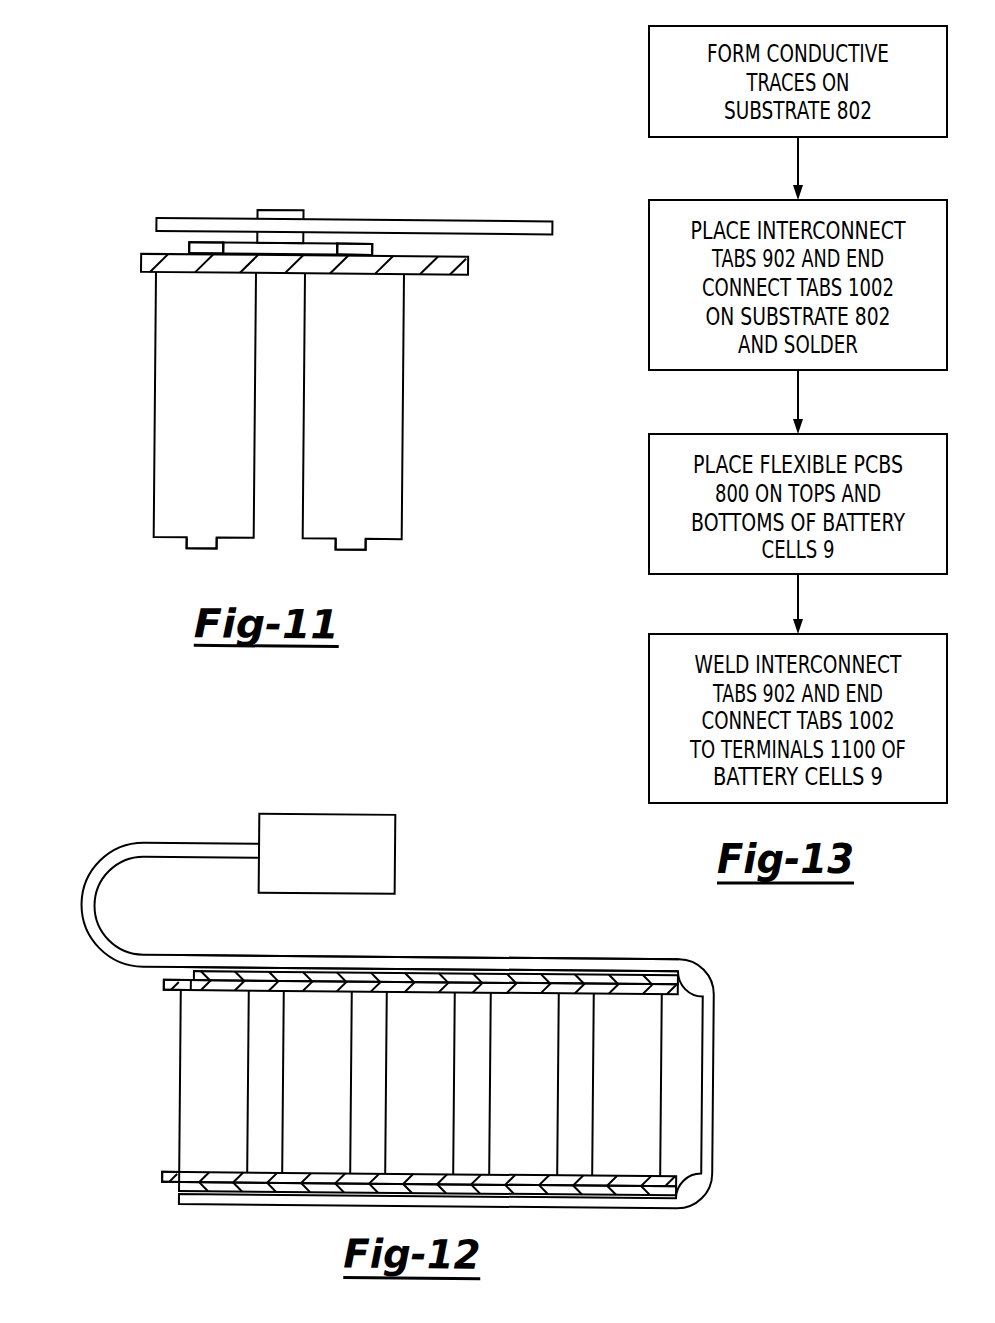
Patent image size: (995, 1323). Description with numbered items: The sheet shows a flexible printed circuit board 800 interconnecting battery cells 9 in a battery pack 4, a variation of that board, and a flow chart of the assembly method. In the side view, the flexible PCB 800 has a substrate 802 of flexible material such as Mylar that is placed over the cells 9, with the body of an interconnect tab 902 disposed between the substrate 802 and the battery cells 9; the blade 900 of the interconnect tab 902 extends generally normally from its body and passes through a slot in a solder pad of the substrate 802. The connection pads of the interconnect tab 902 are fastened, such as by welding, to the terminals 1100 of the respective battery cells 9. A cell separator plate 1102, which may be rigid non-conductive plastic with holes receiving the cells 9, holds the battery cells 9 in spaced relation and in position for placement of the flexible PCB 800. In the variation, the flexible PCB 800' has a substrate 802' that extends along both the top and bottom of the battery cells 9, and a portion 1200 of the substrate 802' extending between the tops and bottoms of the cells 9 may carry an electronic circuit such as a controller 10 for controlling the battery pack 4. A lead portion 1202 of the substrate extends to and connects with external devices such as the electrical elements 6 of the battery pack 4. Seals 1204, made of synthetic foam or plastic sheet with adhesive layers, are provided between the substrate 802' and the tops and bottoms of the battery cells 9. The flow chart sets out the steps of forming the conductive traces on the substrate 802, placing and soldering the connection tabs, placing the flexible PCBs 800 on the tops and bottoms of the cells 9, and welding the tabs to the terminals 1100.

In FIG. 12, the battery pack 4 is at (433, 1040).
In FIG. 12, the electrical elements 6 is at (337, 869).
In FIG. 11, the battery cells 9 is at (217, 398).
In FIG. 12, the battery cells 9 is at (639, 1095).
In FIG. 12, the controller 10 is at (438, 1062).
In FIG. 11, the flexible printed circuit board 800 is at (354, 179).
In FIG. 12, the flexible printed circuit board 800' is at (430, 908).
In FIG. 11, the substrate 802 is at (354, 197).
In FIG. 12, the substrate 802' is at (430, 916).
In FIG. 11, the blade 900 is at (283, 208).
In FIG. 11, the interconnect tab 902 is at (240, 249).
In FIG. 11, the terminal 1100 is at (190, 248).
In FIG. 11, the cell separator plate 1102 is at (453, 261).
In FIG. 12, the cell separator plate 1102 is at (190, 983).
In FIG. 12, the portion of substrate 1200 is at (715, 1032).
In FIG. 12, the lead portion 1202 is at (119, 849).
In FIG. 12, the seals 1204 is at (215, 975).